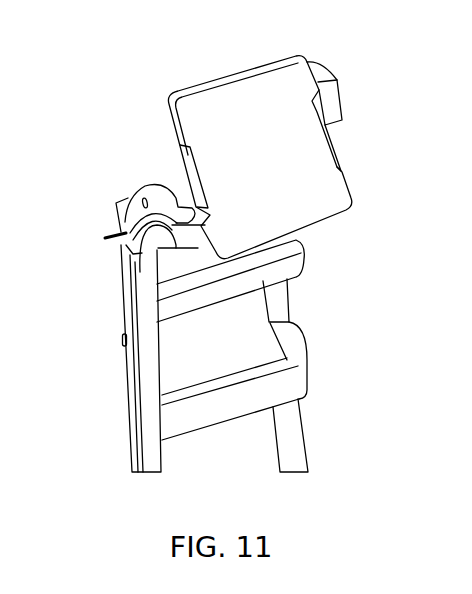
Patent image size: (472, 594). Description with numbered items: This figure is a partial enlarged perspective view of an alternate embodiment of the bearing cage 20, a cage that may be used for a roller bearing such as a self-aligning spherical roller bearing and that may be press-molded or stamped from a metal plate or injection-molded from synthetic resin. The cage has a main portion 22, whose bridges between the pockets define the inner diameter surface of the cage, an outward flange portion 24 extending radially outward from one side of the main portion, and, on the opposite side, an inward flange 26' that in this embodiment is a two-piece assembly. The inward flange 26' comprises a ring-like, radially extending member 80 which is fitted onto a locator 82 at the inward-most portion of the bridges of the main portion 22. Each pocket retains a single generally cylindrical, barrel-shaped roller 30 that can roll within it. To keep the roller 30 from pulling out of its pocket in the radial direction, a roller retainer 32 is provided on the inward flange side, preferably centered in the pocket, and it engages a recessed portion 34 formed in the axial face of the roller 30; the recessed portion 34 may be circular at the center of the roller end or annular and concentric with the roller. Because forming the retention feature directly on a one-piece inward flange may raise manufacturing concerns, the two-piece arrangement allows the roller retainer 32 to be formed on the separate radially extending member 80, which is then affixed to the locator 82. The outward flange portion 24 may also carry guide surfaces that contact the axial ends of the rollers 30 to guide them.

The cage 20 is at (290, 298).
The main portion 22 is at (192, 418).
The outward flange portion 24 is at (320, 72).
The inward flange 26' is at (96, 246).
The roller 30 is at (180, 117).
The roller retainer 32 is at (203, 240).
The recessed portion 34 is at (178, 168).
The radially extending member 80 is at (157, 197).
The locator 82 is at (160, 234).